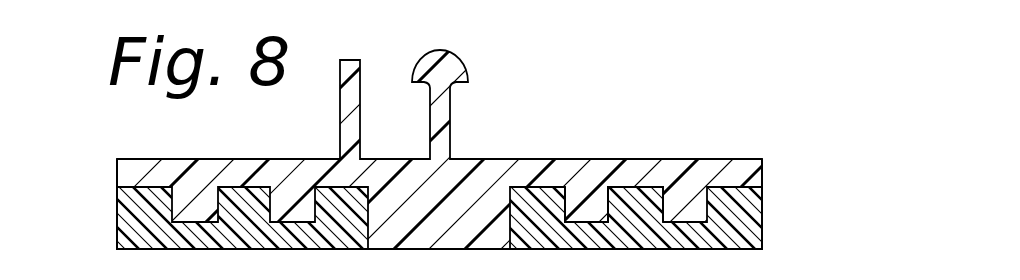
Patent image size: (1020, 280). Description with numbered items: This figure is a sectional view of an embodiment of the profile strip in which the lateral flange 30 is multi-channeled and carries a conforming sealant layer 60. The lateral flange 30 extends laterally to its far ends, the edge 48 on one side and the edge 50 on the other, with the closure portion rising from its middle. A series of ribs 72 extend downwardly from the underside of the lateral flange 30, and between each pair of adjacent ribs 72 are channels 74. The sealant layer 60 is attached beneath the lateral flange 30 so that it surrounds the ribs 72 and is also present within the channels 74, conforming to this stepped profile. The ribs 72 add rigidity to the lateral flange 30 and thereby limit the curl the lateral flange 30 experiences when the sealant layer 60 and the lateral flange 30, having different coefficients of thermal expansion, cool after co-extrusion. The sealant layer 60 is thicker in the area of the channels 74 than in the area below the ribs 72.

The lateral flange 30 is at (765, 161).
The edge 48 is at (763, 175).
The edge 50 is at (117, 183).
The sealant layer 60 is at (771, 227).
The ribs 72 is at (572, 207).
The channels 74 is at (636, 208).